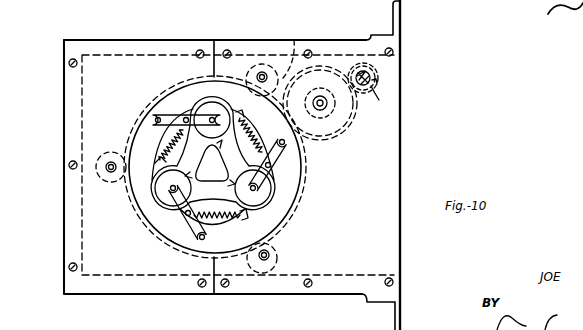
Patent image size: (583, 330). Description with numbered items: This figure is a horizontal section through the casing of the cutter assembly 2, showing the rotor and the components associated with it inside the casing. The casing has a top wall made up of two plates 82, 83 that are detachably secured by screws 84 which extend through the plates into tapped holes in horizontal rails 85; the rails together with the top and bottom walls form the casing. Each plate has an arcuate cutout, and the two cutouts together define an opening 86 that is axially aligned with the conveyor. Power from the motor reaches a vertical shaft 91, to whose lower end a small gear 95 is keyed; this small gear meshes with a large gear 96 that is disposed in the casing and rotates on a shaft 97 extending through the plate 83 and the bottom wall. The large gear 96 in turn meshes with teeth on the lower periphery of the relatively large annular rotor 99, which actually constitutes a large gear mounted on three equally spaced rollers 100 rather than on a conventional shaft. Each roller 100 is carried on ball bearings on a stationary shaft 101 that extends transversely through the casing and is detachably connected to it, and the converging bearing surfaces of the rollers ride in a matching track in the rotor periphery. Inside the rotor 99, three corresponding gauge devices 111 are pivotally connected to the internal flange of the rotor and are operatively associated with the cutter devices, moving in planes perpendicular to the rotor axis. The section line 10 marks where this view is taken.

The cutter assembly 2 is at (114, 27).
The section line 10— 10 is at (393, 13).
The plate 82 is at (72, 95).
The plate 83 is at (402, 155).
The screws 84 is at (69, 64).
The horizontal rails 85 is at (160, 46).
The opening 86 is at (284, 218).
The vertical shaft 91 is at (373, 90).
The small gear 95 is at (378, 78).
The large gear 96 is at (345, 121).
The shaft 97 is at (324, 110).
The annular rotor 99 is at (151, 231).
The rollers 100 is at (293, 40).
The stationary shaft 101 is at (262, 72).
The gauge devices 111 is at (175, 111).